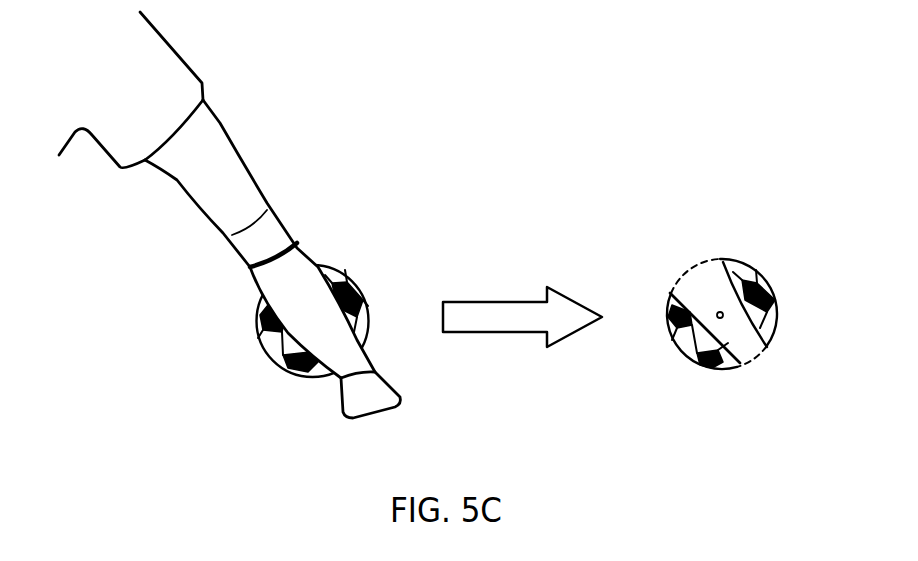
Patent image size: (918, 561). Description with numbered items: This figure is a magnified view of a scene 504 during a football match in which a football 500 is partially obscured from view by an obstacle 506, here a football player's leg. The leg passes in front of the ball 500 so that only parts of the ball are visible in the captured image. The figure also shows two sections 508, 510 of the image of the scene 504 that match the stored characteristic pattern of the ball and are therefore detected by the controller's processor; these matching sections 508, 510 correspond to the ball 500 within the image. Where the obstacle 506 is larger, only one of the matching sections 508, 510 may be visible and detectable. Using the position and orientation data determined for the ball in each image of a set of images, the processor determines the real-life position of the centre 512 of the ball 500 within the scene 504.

The football 500 is at (266, 351).
The scene 504 is at (327, 165).
The obstacle 506 is at (196, 206).
The matching section 508 is at (707, 368).
The matching section 510 is at (770, 288).
The centre of the ball 512 is at (722, 318).